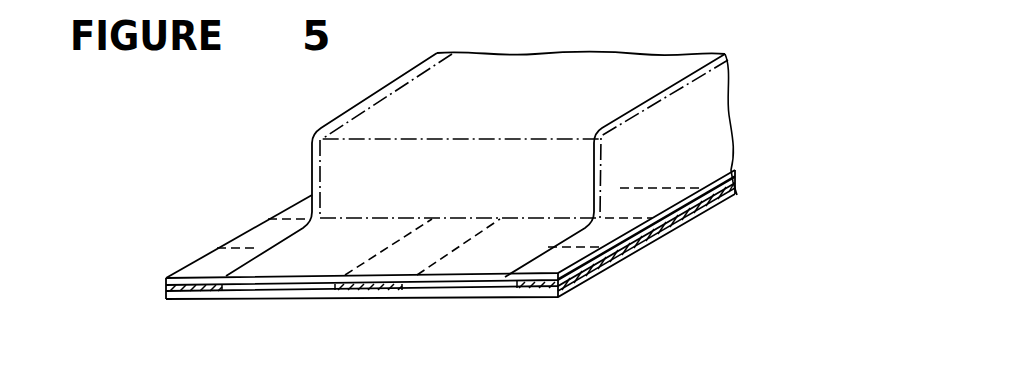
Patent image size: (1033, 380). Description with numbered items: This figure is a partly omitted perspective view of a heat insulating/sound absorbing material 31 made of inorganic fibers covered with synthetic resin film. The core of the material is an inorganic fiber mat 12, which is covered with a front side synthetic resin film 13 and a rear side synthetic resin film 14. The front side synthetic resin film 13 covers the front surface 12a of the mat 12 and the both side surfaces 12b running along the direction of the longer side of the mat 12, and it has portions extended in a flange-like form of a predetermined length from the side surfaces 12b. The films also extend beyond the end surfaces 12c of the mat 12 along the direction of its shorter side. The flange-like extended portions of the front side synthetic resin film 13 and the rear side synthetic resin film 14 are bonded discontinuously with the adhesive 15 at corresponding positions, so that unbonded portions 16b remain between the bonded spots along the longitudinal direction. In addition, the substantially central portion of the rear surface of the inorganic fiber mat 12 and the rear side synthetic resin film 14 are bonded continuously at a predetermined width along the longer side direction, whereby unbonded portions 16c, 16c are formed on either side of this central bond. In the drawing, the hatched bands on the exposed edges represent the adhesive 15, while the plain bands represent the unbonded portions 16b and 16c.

The inorganic fiber mat 12 is at (710, 120).
The front surface 12a is at (407, 108).
The side surfaces 12b is at (707, 88).
The end surfaces 12c is at (563, 172).
The front side synthetic resin film 13 is at (268, 237).
The rear side synthetic resin film 14 is at (640, 245).
The adhesive 15 is at (372, 288).
The unbonded portions 16b is at (650, 230).
The unbonded portions 16c is at (280, 290).
The heat insulating/sound absorbing material 31 is at (297, 153).